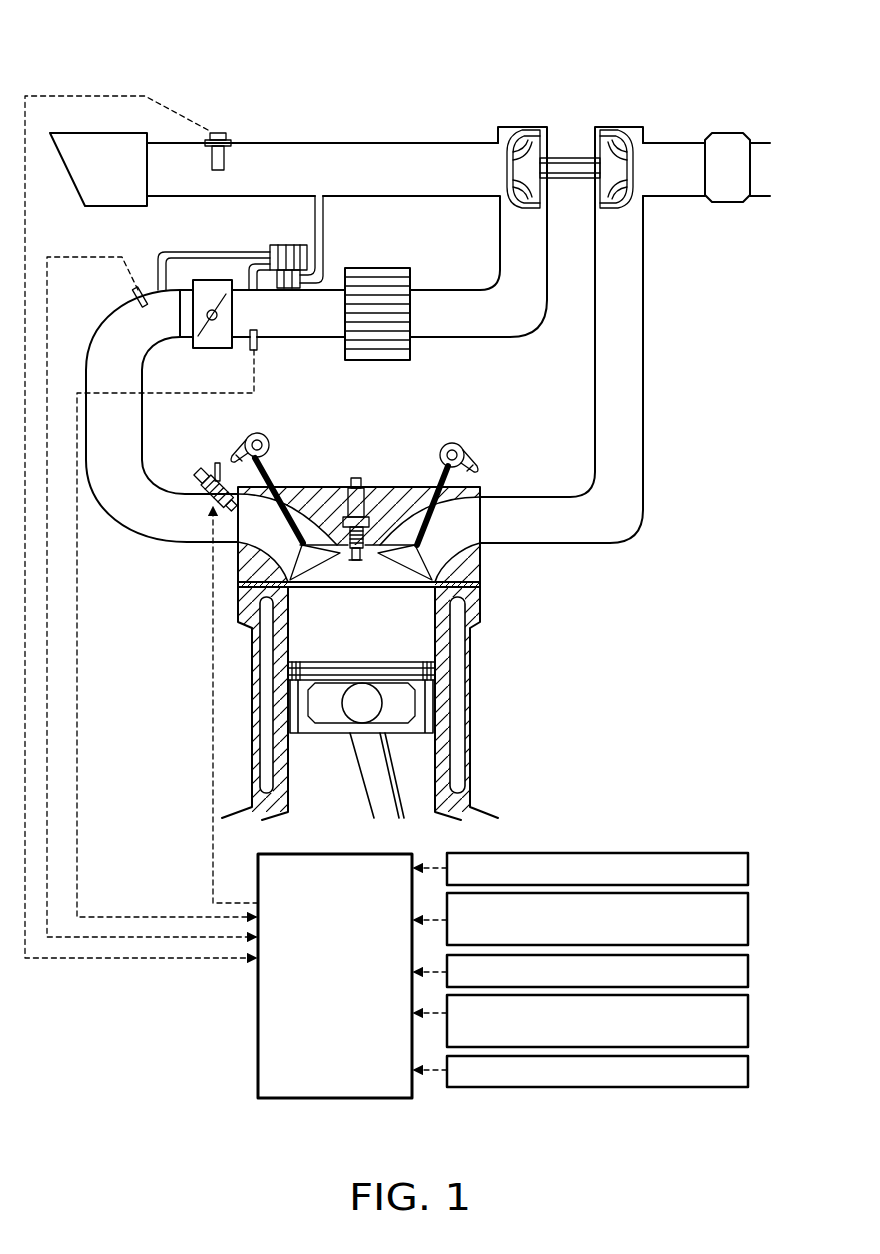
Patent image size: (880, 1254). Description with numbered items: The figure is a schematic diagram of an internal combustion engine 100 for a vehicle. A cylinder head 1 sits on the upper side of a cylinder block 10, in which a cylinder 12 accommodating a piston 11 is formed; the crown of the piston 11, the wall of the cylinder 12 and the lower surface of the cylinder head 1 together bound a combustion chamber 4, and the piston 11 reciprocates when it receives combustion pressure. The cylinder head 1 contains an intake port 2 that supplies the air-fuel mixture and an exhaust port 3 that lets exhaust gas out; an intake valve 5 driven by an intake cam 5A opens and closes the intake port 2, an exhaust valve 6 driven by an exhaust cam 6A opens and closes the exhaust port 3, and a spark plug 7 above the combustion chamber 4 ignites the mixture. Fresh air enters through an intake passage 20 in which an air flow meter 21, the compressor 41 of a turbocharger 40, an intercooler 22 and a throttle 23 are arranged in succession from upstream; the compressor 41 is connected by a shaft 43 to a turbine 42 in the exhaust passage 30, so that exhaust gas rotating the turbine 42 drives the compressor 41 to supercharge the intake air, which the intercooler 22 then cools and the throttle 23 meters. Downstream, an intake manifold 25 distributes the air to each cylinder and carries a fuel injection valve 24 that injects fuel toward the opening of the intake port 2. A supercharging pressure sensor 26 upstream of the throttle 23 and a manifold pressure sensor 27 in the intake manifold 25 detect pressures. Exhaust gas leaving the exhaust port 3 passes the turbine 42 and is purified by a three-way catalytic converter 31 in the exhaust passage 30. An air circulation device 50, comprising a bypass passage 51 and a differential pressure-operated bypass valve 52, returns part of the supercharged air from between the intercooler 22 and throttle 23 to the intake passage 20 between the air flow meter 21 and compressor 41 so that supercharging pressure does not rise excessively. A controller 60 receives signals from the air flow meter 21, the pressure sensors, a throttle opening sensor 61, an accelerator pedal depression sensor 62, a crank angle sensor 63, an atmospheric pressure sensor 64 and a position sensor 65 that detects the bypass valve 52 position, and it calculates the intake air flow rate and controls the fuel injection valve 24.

The cylinder head 1 is at (480, 568).
The intake port 2 is at (300, 505).
The exhaust port 3 is at (404, 508).
The combustion chamber 4 is at (422, 626).
The intake valve 5 is at (280, 487).
The intake cam 5A is at (256, 440).
The exhaust valve 6 is at (437, 483).
The exhaust cam 6A is at (453, 443).
The spark plug 7 is at (367, 485).
The cylinder block 10 is at (476, 600).
The piston 11 is at (432, 715).
The cylinder 12 is at (442, 654).
The intake passage 20 is at (468, 342).
The air flow meter 21 is at (218, 132).
The intercooler 22 is at (398, 268).
The throttle 23 is at (207, 332).
The fuel injection valve 24 is at (197, 470).
The intake manifold 25 is at (143, 409).
The supercharging pressure sensor 26 is at (258, 350).
The manifold pressure sensor 27 is at (135, 295).
The exhaust passage 30 is at (650, 353).
The three-way catalytic converter 31 is at (728, 203).
The turbocharger 40 is at (570, 127).
The compressor 41 is at (516, 192).
The turbine 42 is at (628, 192).
The shaft 43 is at (572, 180).
The air circulation device 50 is at (330, 222).
The bypass passage 51 is at (327, 250).
The bypass valve 52 is at (288, 245).
The controller 60 is at (316, 1100).
The throttle opening sensor 61 is at (751, 869).
The accelerator pedal depression sensor 62 is at (751, 919).
The crank angle sensor 63 is at (751, 971).
The atmospheric pressure sensor 64 is at (751, 1016).
The position sensor 65 is at (751, 1071).
The internal combustion engine 100 is at (575, 71).